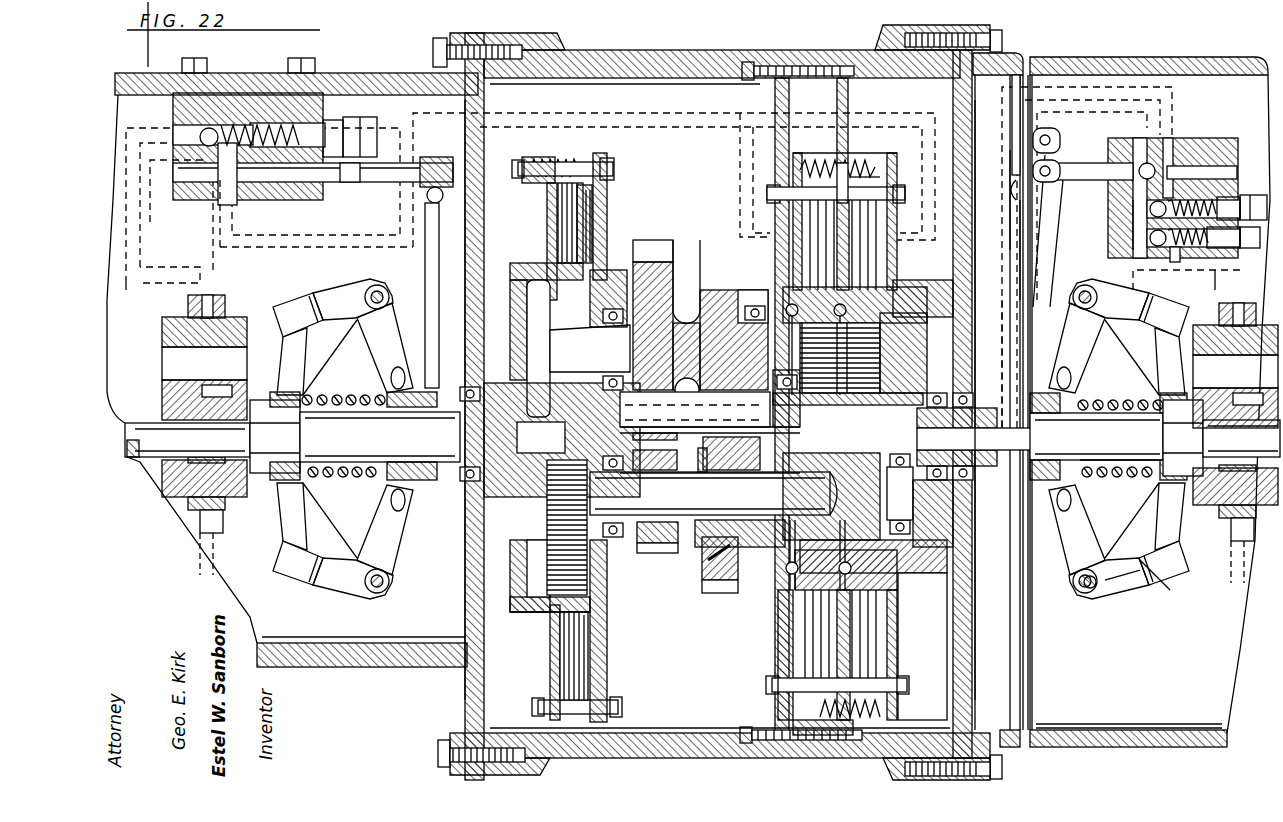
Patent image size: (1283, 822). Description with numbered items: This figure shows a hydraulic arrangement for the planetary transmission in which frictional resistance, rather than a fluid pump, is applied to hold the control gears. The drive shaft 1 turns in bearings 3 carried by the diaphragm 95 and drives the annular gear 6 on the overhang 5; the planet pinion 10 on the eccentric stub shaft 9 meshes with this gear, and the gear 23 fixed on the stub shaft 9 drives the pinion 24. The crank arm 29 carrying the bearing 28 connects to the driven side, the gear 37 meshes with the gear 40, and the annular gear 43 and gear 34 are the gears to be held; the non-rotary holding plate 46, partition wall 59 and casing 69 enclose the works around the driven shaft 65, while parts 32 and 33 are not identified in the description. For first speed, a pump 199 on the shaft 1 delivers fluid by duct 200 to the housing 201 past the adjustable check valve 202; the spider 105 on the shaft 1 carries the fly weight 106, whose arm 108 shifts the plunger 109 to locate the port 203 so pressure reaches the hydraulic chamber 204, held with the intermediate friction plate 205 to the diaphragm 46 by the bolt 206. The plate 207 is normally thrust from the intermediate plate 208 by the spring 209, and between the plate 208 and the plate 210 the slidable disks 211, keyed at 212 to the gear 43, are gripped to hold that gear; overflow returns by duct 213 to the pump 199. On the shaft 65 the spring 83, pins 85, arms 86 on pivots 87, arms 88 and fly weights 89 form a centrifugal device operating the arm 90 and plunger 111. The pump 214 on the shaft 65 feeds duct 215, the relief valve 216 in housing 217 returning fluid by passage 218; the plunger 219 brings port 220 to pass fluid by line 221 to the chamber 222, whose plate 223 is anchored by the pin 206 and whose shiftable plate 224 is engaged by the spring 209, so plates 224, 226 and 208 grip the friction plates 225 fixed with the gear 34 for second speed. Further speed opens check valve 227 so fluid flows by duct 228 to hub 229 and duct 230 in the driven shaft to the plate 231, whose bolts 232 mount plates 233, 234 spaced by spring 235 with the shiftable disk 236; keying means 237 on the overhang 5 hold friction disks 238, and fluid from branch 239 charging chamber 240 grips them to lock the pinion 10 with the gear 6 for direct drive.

The shaft 1 is at (150, 455).
The bearings 3 is at (455, 500).
The overhang 5 is at (525, 612).
The annular gear 6 is at (547, 562).
The stub shaft 9 is at (555, 347).
The pinion 10 is at (538, 262).
The gear 23 is at (685, 246).
The pinion 24 is at (645, 553).
The bearing 28 is at (915, 528).
The arm 29 is at (930, 553).
The bearing 32 is at (925, 395).
The housing wall 33 is at (945, 585).
The annular gear 34 is at (880, 570).
The gear 37 is at (700, 293).
The gear 40 is at (713, 598).
The annular gear 43 is at (850, 322).
The holding plate 46 is at (775, 265).
The partition wall 59 is at (975, 660).
The shaft 65 is at (1130, 465).
The casing 69 is at (1140, 729).
The compression helical spring 83 is at (345, 477).
The pins 85 is at (1065, 500).
The arms 86 is at (1075, 578).
The pivotal mountings 87 is at (1092, 595).
The arms 88 is at (1128, 585).
The fly weights 89 is at (1150, 580).
The arm 90 is at (1010, 260).
The diaphragm 95 is at (484, 128).
The spider 105 is at (300, 522).
The fly weight 106 is at (318, 296).
The arm 108 is at (425, 262).
The plunger 109 is at (352, 182).
The plunger 111 is at (1010, 180).
The pump 199 is at (188, 313).
The duct 200 is at (212, 262).
The housing 201 is at (305, 185).
The valve 202 is at (185, 129).
The port 203 is at (222, 205).
The hydraulic chamber 204 is at (770, 232).
The intermediate friction plate 205 is at (818, 160).
The bolt 206 is at (790, 194).
The plate 207 is at (770, 165).
The intermediate plate 208 is at (880, 262).
The compression helical spring 209 is at (860, 170).
The plate 210 is at (760, 268).
The friction disks 211 is at (855, 165).
The key portions 212 is at (790, 290).
The duct 213 is at (160, 250).
The pump 214 is at (1220, 508).
The duct 215 is at (1215, 283).
The relief valve 216 is at (1150, 239).
The housing 217 is at (1230, 140).
The passage 218 is at (1133, 268).
The plunger 219 is at (1150, 207).
The port 220 is at (1083, 175).
The line 221 is at (1012, 150).
The hydraulic chamber 222 is at (880, 230).
The plate 223 is at (890, 283).
The plate 224 is at (870, 190).
The friction plates 225 is at (860, 640).
The friction plate 226 is at (880, 712).
The check valve 227 is at (1108, 226).
The duct 228 is at (1002, 355).
The hub 229 is at (1008, 500).
The duct 230 is at (1030, 437).
The plate 231 is at (607, 590).
The bolts 232 is at (612, 168).
The plate 233 is at (585, 155).
The plate 234 is at (540, 203).
The spring means 235 is at (540, 160).
The friction disk 236 is at (560, 655).
The external keying means 237 is at (580, 618).
The friction disks 238 is at (565, 668).
The branch 239 is at (600, 205).
The chamber 240 is at (586, 228).